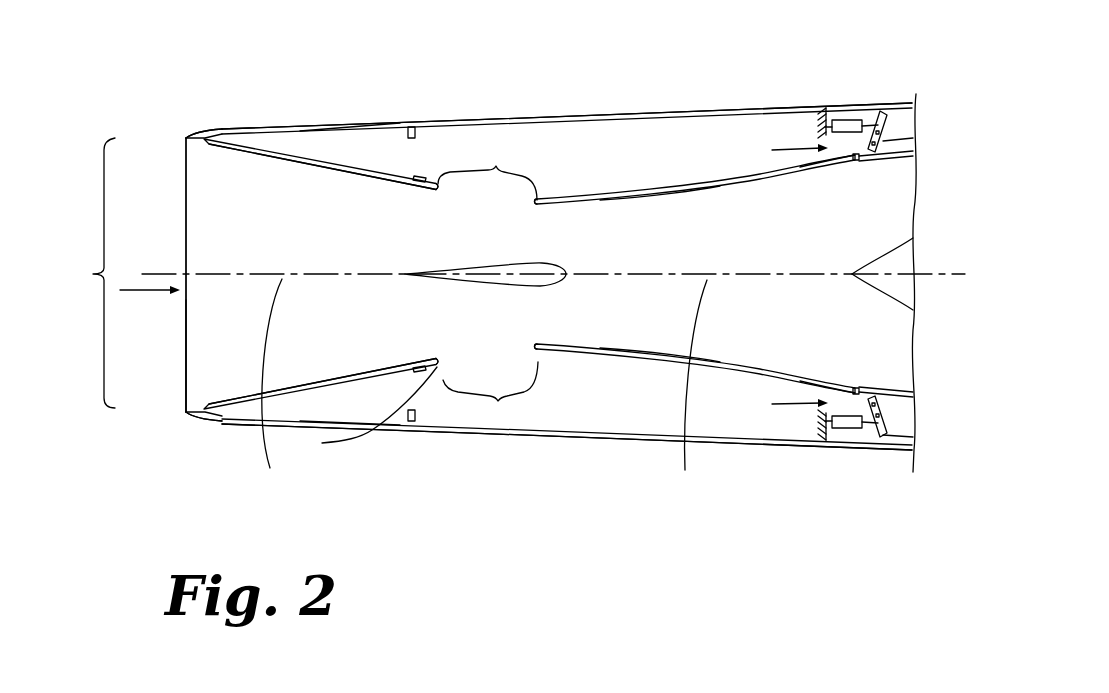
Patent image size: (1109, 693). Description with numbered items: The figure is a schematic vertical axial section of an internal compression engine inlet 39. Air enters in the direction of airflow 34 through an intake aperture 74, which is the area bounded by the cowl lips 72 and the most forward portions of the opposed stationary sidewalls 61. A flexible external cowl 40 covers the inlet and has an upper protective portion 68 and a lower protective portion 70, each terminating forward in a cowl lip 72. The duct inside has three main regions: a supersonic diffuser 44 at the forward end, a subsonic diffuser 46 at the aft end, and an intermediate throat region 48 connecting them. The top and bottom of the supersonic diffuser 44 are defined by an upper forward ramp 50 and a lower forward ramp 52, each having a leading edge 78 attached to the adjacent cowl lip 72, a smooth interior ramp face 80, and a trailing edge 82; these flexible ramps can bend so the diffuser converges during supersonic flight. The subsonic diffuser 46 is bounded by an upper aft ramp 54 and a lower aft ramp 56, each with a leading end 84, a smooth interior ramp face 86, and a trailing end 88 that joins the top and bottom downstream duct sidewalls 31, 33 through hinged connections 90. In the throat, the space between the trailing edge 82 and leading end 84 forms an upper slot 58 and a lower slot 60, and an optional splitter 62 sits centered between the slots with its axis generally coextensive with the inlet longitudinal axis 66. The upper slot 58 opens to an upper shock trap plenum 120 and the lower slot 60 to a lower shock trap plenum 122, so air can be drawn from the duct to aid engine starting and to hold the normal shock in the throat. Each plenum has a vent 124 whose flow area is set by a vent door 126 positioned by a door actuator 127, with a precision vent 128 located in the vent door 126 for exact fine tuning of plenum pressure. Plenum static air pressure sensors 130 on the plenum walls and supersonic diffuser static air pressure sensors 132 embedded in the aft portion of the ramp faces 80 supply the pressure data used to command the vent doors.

The top downstream duct sidewall 31 is at (902, 160).
The bottom downstream duct sidewall 33 is at (903, 392).
The direction of airflow 34 is at (150, 296).
The internal compression engine inlet 39 is at (266, 56).
The flexible external cowl 40 is at (680, 106).
The supersonic diffuser 44 is at (270, 466).
The subsonic diffuser 46 is at (685, 470).
The throat region 48 is at (363, 411).
The upper forward ramp 50 is at (371, 182).
The lower forward ramp 52 is at (371, 366).
The upper aft ramp 54 is at (762, 184).
The lower aft ramp 56 is at (762, 360).
The upper slot 58 is at (487, 170).
The lower slot 60 is at (490, 393).
The stationary sidewall 61 is at (210, 330).
The splitter 62 is at (558, 282).
The inlet longitudinal axis 66 is at (162, 272).
The upper protective portion 68 is at (507, 121).
The lower protective portion 70 is at (507, 430).
The cowl lip 72 is at (222, 128).
The intake aperture 74 is at (123, 275).
The leading edge 78 is at (206, 141).
The interior ramp face 80 is at (320, 163).
The trailing edge 82 is at (437, 189).
The leading end 84 is at (537, 204).
The interior ramp face 86 is at (690, 191).
The trailing end 88 is at (838, 163).
The hinged connection 90 is at (859, 162).
The upper shock trap plenum 120 is at (630, 148).
The lower shock trap plenum 122 is at (610, 400).
The vent 124 is at (779, 278).
The vent door 126 is at (883, 141).
The door actuator 127 is at (845, 120).
The precision vent 128 is at (883, 134).
The plenum static air pressure sensor 130 is at (410, 127).
The supersonic diffuser static air pressure sensor 132 is at (417, 184).